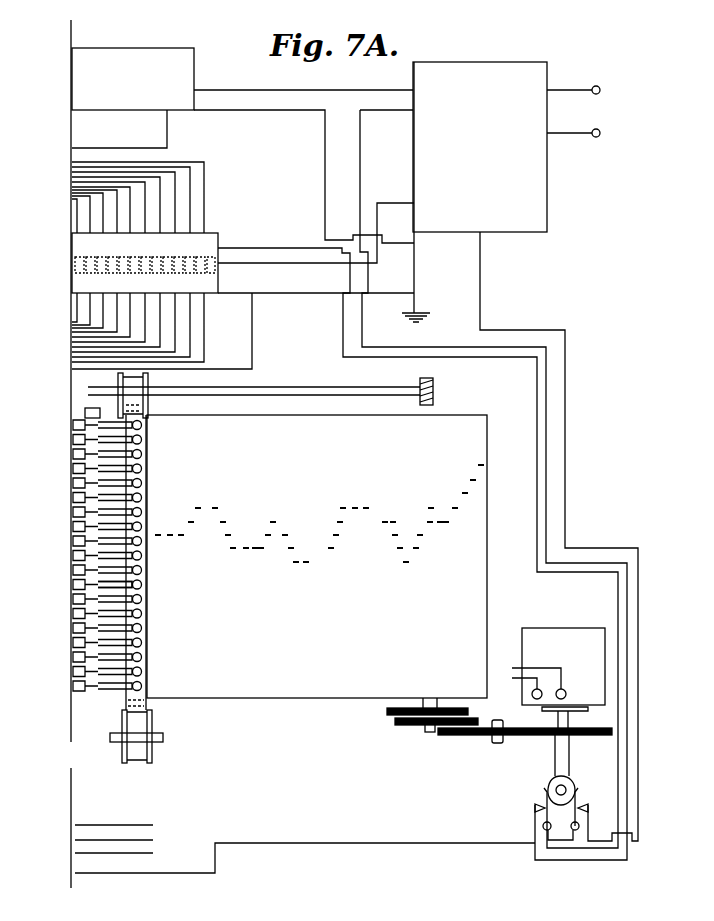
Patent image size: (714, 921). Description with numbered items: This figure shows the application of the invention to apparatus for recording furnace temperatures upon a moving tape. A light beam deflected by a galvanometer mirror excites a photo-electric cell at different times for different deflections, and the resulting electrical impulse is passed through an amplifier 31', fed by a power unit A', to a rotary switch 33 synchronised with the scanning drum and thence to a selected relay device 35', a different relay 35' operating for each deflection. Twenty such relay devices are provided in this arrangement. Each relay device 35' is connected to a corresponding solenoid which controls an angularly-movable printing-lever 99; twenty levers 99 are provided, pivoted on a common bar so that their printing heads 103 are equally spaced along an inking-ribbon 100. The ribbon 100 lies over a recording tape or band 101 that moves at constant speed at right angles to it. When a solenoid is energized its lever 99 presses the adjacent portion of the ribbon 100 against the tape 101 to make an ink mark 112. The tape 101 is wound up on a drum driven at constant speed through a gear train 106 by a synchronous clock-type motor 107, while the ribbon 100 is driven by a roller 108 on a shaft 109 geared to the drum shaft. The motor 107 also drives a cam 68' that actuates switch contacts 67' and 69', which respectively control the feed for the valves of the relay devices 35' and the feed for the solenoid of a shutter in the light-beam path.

The amplifier 31' is at (141, 88).
The relay device 35' is at (162, 256).
The power unit A' is at (506, 135).
The printing-lever 99 is at (114, 414).
The roller 108 is at (148, 399).
The shaft 109 is at (306, 379).
The printing head 103 is at (142, 425).
The contact bank 33 is at (100, 610).
The ink mark 112 is at (153, 535).
The inking-ribbon 100 is at (146, 703).
The recording tape or band 101 is at (317, 680).
The gear train 106 is at (475, 746).
The synchronous clock-type motor 107 is at (560, 640).
The cam 68' is at (578, 770).
The switch contact 67' is at (532, 814).
The switch contact 69' is at (592, 806).